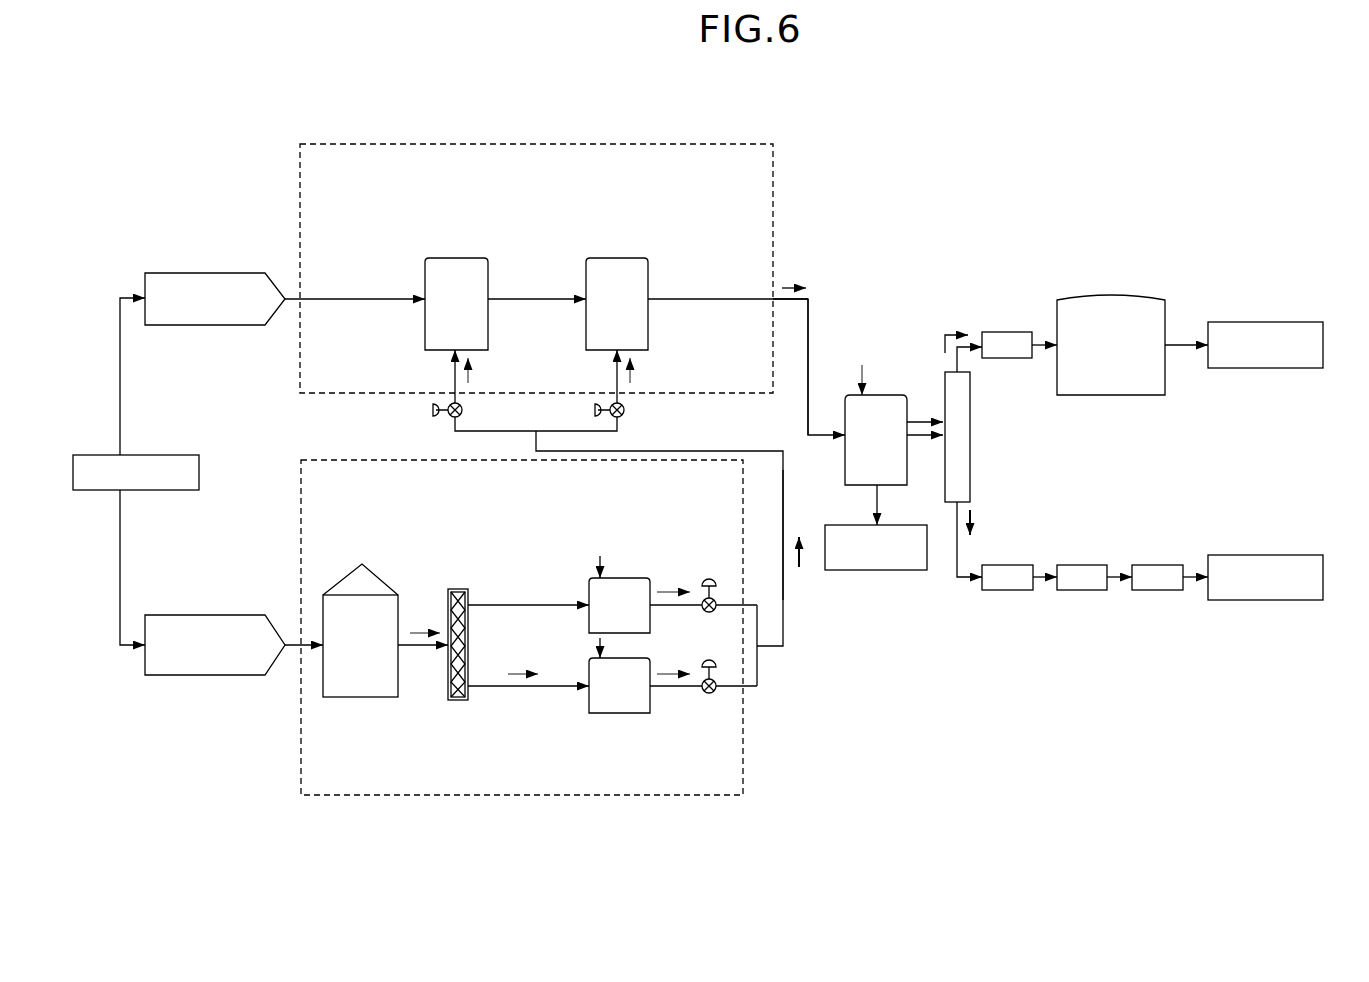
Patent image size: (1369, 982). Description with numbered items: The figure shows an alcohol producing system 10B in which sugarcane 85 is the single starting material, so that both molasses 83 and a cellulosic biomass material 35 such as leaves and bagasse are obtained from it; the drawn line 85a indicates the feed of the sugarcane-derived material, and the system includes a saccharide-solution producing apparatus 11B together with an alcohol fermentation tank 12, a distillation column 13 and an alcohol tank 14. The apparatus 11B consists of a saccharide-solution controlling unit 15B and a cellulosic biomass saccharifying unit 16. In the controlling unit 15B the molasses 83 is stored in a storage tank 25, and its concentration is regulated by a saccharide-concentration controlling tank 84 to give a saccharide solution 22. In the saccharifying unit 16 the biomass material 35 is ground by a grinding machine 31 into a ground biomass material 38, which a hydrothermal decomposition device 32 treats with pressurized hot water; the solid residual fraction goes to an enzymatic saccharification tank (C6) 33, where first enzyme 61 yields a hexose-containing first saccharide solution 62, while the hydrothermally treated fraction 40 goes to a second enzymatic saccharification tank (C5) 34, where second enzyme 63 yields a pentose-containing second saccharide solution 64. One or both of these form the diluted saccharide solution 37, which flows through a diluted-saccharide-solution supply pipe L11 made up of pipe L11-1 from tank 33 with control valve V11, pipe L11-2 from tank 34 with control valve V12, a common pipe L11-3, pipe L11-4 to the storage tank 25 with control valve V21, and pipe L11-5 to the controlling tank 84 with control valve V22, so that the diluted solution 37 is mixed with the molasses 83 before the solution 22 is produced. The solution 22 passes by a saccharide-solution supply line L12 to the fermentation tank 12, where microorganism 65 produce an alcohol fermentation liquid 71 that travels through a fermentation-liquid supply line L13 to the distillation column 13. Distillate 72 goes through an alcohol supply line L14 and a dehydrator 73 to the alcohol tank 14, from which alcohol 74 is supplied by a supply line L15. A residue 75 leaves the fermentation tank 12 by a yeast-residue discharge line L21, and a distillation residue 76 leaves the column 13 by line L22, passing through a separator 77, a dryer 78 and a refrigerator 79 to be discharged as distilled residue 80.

The alcohol producing system 10B is at (1050, 122).
The saccharide-solution producing apparatus 11B is at (255, 122).
The saccharide-solution controlling unit 15B is at (535, 143).
The cellulosic biomass saccharifying unit 16 is at (537, 797).
The alcohol fermentation tank 12 is at (878, 395).
The distillation column 13 is at (970, 456).
The alcohol tank 14 is at (1110, 295).
The saccharide solution 22 is at (790, 280).
The storage tank 25 is at (457, 258).
The grinding machine 31 is at (370, 565).
The hydrothermal decomposition device 32 is at (458, 590).
The enzymatic saccharification tank (C6) 33 is at (620, 578).
The second enzymatic saccharification tank (C5) 34 is at (615, 713).
The cellulosic biomass material 35 is at (203, 615).
The diluted saccharide solution 37 is at (803, 545).
The ground biomass material 38 is at (424, 633).
The hydrothermally treated fraction 40 is at (520, 674).
The first enzyme (cellulase) 61 is at (600, 564).
The first saccharide solution 62 is at (672, 592).
The second enzyme 63 is at (600, 644).
The second saccharide solution 64 is at (672, 674).
The microorganism 65 is at (860, 378).
The alcohol fermentation liquid 71 is at (916, 415).
The distillate 72 is at (948, 335).
The dehydrator 73 is at (1010, 332).
The alcohol 74 is at (1268, 322).
The residue 75 is at (893, 528).
The distillation residue 76 is at (978, 522).
The separator 77 is at (1000, 592).
The dryer 78 is at (1083, 592).
The refrigerator 79 is at (1158, 592).
The distilled residue 80 is at (1268, 555).
The molasses 83 is at (203, 273).
The saccharide-concentration controlling tank 84 is at (612, 258).
The sugarcane 85 is at (201, 470).
The sugarcane supply line 85a is at (122, 545).
The diluted-saccharide-solution supply pipe L11 is at (806, 628).
The diluted-saccharide-solution supply pipe L11-1 is at (750, 600).
The diluted-saccharide-solution supply pipe L11-2 is at (758, 694).
The diluted-saccharide-solution supply pipe L11-3 is at (785, 506).
The diluted-saccharide-solution supply pipe L11-4 is at (455, 431).
The diluted-saccharide-solution supply pipe L11-5 is at (621, 431).
The saccharide-solution supply line L12 is at (808, 300).
The fermentation-liquid supply line L13 is at (915, 445).
The alcohol supply line L14 is at (1040, 362).
The supply line L15 is at (1180, 348).
The yeast-residue discharge line L21 is at (875, 498).
The distillation residue line L22 is at (965, 556).
The control valve V11 is at (709, 579).
The control valve V12 is at (709, 660).
The control valve V21 is at (428, 410).
The control valve V22 is at (590, 410).